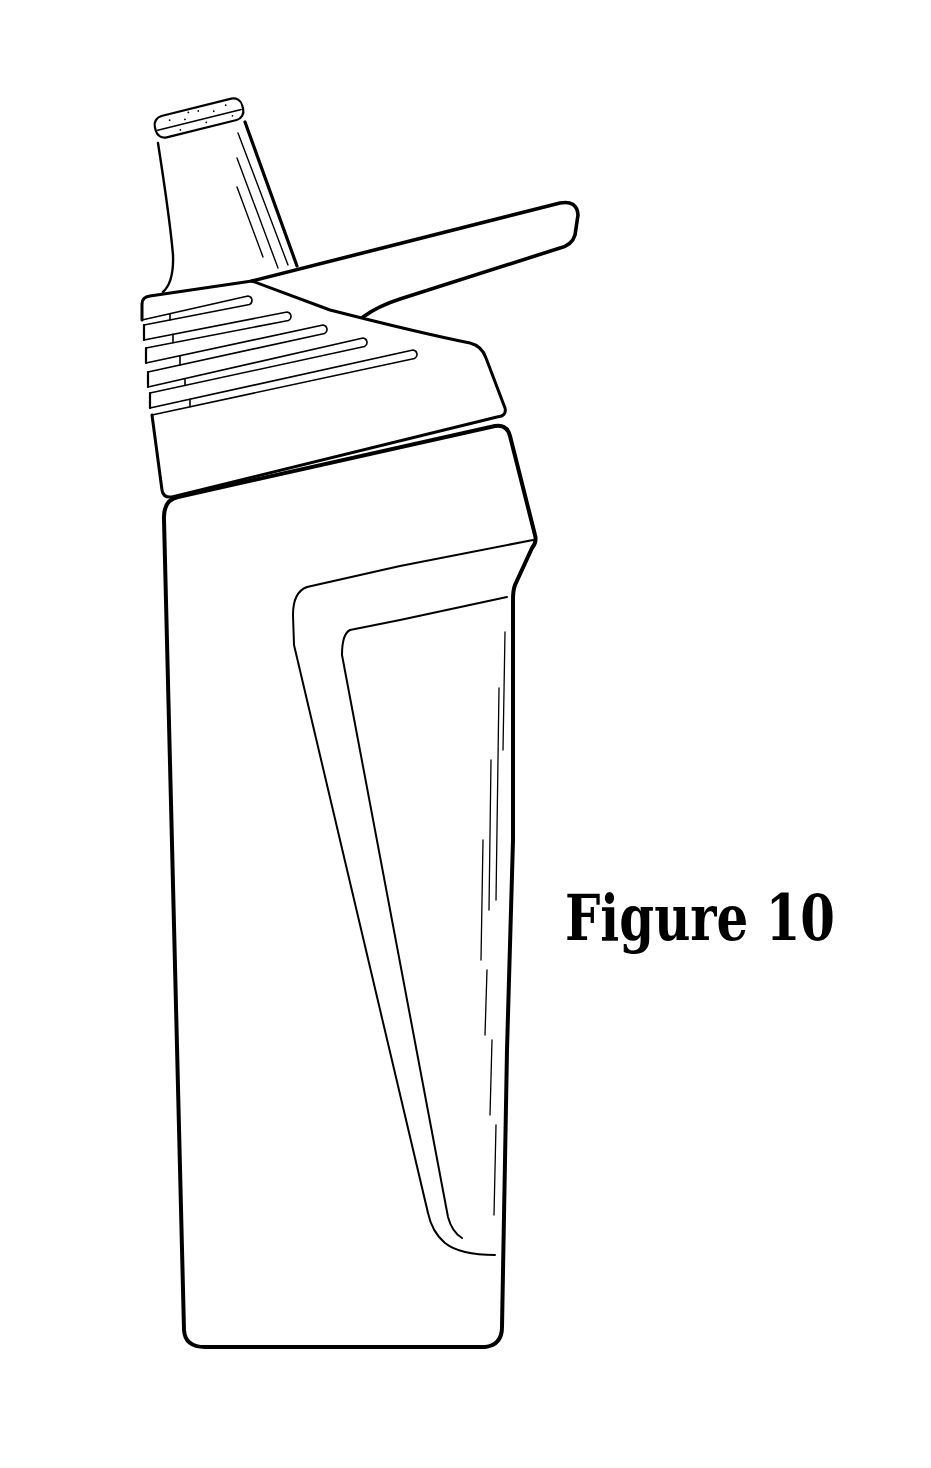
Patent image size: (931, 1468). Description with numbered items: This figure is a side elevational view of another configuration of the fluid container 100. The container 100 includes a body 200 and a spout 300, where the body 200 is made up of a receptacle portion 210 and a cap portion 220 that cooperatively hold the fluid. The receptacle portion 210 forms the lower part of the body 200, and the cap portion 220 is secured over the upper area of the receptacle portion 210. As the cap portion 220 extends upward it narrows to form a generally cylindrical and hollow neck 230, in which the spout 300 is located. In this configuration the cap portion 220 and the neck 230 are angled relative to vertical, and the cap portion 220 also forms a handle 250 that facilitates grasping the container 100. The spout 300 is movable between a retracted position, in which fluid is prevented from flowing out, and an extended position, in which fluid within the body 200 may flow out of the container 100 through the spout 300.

The fluid container 100 is at (620, 122).
The body 200 is at (156, 653).
The receptacle portion 210 is at (515, 747).
The cap portion 220 is at (497, 373).
The neck 230 is at (266, 181).
The handle 250 is at (502, 214).
The spout 300 is at (158, 112).